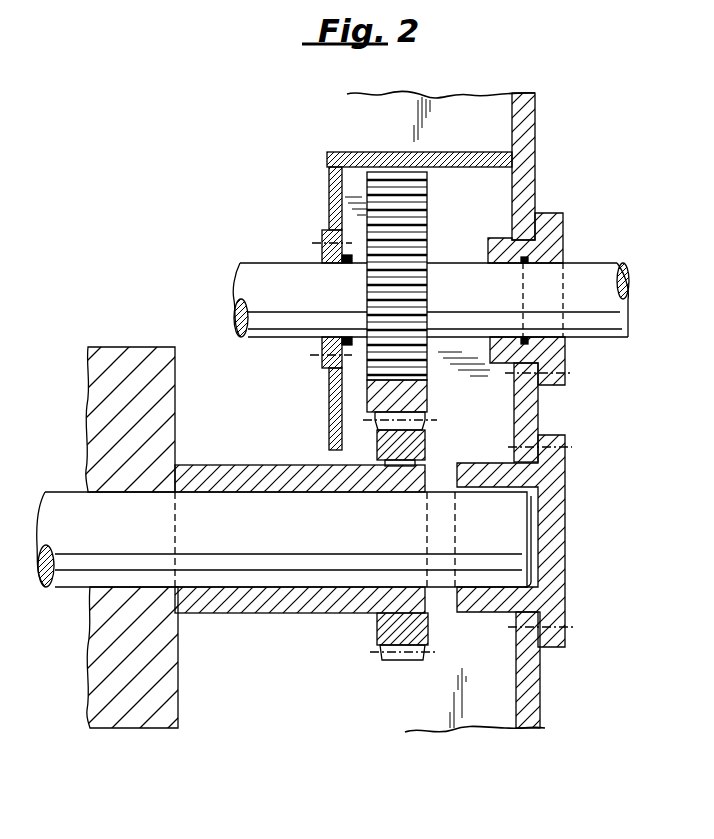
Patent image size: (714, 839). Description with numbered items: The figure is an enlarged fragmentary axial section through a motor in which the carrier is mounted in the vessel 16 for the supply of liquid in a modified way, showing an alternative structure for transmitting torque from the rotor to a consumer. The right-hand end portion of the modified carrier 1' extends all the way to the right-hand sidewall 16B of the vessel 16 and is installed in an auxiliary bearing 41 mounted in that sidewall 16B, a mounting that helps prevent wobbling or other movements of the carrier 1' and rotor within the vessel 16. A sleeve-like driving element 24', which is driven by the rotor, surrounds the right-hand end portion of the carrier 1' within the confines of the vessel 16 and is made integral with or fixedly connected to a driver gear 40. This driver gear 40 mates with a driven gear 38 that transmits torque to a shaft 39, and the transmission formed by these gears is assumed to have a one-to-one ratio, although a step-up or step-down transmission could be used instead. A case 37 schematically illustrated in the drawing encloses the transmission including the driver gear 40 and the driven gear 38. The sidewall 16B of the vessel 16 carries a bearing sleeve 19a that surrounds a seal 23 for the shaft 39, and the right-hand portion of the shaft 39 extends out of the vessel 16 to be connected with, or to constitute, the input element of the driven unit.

The carrier 1' is at (284, 580).
The vessel 16 is at (553, 693).
The sidewall 16B is at (521, 150).
The bearing sleeve 19a is at (553, 350).
The seal 23 is at (523, 262).
The sleeve-like driving element 24' is at (255, 537).
The cover cap 37 is at (352, 158).
The driven gear 38 is at (412, 222).
The shaft 39 is at (605, 312).
The driver gear 40 is at (410, 447).
The auxiliary bearing 41 is at (553, 558).